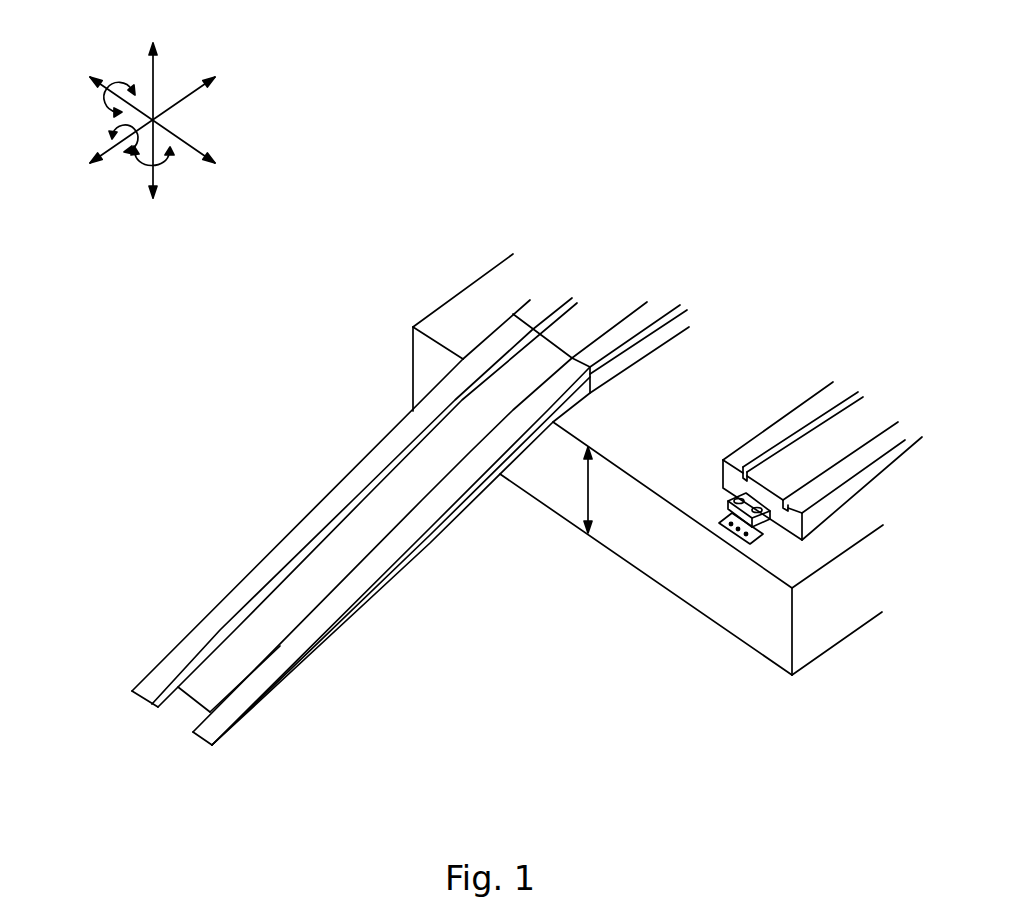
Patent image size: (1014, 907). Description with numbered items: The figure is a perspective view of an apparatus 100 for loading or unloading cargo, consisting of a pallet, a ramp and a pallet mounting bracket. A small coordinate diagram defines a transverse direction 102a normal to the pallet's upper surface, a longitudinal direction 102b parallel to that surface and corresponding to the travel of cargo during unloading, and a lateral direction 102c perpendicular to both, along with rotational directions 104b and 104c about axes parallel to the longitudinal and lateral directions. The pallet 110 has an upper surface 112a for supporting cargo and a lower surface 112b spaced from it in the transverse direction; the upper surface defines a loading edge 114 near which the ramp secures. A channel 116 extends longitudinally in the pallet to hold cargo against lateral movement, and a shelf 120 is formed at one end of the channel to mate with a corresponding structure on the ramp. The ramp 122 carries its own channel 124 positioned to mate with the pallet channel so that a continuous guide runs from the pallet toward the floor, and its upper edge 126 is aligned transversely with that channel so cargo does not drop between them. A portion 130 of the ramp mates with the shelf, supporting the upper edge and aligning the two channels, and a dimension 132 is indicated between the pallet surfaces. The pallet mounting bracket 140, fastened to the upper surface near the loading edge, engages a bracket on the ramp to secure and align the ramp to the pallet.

The apparatus for loading or unloading cargo 100 is at (417, 216).
The transverse direction 102a is at (153, 66).
The longitudinal direction 102b is at (196, 97).
The lateral direction 102c is at (203, 138).
The rotational direction 104b is at (110, 126).
The rotational direction 104c is at (127, 84).
The pallet 110 is at (716, 647).
The upper surface 112a is at (452, 307).
The lower surface 112b is at (613, 560).
The loading edge 114 is at (430, 346).
The channel 116 is at (580, 303).
The shelf 120 is at (714, 513).
The ramp 122 is at (448, 616).
The channel 124 is at (380, 484).
The upper edge 126 is at (553, 357).
The portion of the ramp 130 is at (582, 402).
The height dimension 132 is at (590, 480).
The pallet mounting bracket 140 is at (776, 551).